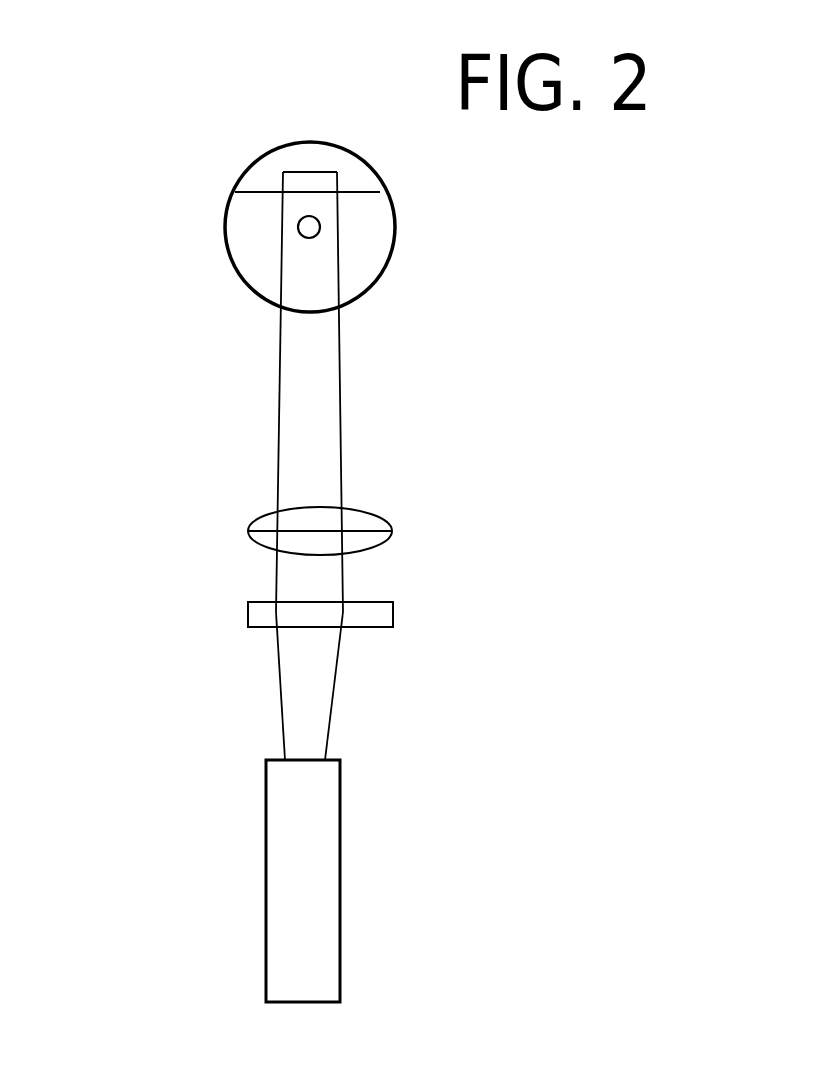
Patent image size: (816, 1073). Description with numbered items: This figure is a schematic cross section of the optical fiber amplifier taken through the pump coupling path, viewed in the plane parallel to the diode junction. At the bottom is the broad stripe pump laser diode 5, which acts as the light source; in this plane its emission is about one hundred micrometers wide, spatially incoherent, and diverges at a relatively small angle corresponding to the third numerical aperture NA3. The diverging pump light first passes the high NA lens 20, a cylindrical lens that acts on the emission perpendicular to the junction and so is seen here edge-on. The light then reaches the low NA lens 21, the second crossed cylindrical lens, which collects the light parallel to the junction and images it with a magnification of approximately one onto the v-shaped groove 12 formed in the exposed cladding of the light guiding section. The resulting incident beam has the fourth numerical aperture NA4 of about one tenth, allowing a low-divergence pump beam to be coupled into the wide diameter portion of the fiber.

The v-shaped groove 12 is at (308, 155).
The fourth numerical aperture NA4 is at (297, 382).
The low NA lens 21 is at (297, 528).
The high NA lens 20 is at (320, 610).
The third numerical aperture NA3 is at (295, 665).
The broad stripe pump laser diode 5 is at (297, 838).